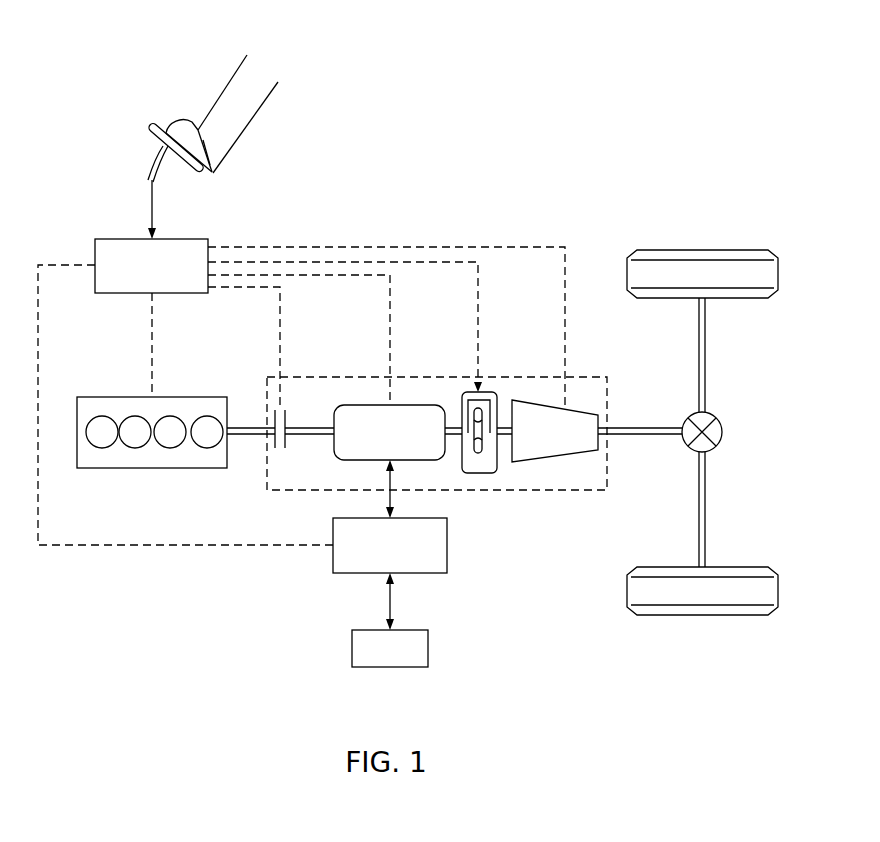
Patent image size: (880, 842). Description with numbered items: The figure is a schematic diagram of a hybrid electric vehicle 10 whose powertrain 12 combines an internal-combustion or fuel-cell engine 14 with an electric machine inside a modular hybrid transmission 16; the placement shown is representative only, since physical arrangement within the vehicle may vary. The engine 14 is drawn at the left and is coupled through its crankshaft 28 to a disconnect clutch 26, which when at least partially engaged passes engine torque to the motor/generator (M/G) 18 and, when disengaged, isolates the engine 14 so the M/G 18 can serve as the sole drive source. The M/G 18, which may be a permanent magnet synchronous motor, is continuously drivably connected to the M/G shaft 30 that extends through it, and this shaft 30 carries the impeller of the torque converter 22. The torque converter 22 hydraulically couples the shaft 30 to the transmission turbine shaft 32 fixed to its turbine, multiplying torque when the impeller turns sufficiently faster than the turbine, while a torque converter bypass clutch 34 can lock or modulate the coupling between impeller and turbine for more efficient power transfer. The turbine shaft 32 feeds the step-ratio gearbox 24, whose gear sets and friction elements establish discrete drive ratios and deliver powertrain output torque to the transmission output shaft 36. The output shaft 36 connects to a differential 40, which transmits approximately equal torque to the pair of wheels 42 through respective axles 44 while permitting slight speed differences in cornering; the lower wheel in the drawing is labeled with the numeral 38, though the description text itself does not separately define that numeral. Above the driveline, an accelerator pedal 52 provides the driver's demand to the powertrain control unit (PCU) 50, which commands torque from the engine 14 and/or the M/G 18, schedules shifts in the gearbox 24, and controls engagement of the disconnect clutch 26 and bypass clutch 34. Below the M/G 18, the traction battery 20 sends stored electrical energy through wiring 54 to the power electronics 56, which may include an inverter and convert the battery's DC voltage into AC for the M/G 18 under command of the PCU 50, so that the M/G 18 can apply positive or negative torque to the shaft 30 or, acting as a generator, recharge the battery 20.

The hybrid electric vehicle 10 is at (614, 190).
The powertrain 12 is at (222, 582).
The engine 14 is at (95, 397).
The transmission 16 is at (420, 377).
The electric motor/generator (M/G) 18 is at (372, 405).
The traction battery 20 is at (352, 650).
The torque converter 22 is at (473, 475).
The gearbox 24 is at (548, 462).
The disconnect clutch 26 is at (276, 449).
The crankshaft 28 is at (252, 428).
The M/G shaft 30 is at (318, 428).
The transmission turbine shaft 32 is at (500, 425).
The torque converter bypass clutch 34 is at (481, 386).
The transmission output shaft 36 is at (652, 427).
The wheel 38 is at (702, 617).
The differential 40 is at (722, 432).
The wheels 42 is at (704, 250).
The axles 44 is at (706, 352).
The powertrain control unit (PCU) 50 is at (110, 239).
The accelerator pedal 52 is at (145, 134).
The wiring 54 is at (387, 499).
The power electronics 56 is at (447, 545).